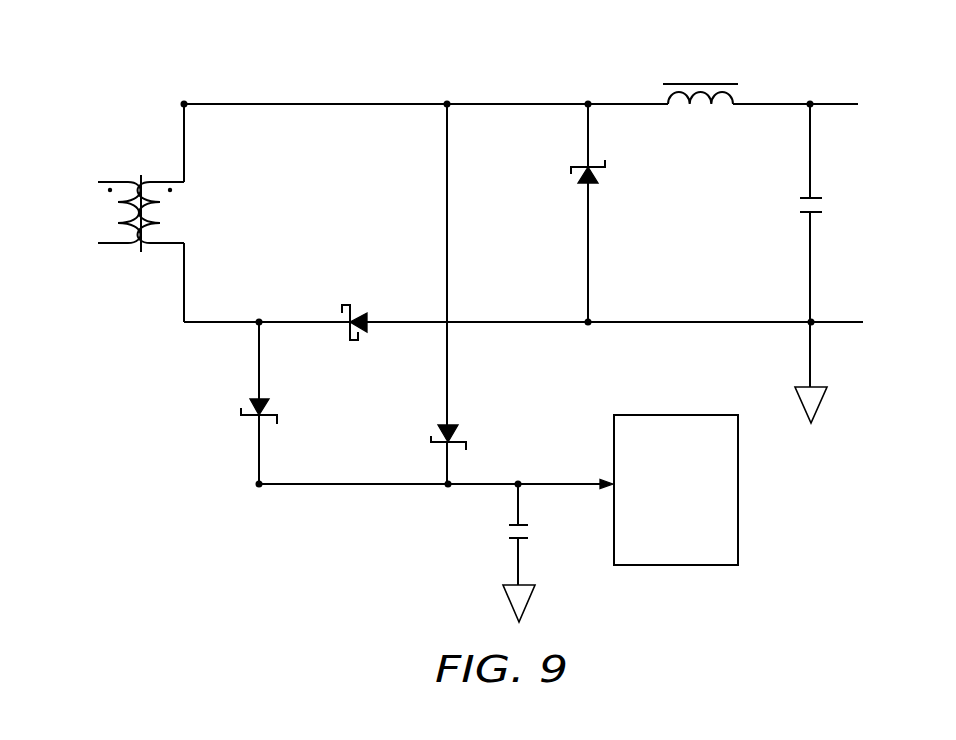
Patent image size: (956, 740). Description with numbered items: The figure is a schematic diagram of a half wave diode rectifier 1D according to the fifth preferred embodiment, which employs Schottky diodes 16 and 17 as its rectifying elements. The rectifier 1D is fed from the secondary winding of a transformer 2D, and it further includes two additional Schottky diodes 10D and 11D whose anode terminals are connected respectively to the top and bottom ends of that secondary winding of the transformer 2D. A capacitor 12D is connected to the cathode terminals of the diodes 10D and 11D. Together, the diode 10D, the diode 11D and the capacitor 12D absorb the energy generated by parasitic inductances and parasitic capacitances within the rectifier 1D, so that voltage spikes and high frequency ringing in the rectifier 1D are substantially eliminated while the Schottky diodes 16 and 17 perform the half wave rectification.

The half wave diode rectifier 1D is at (170, 72).
The transformer 2D is at (80, 229).
The Schottky diode 16 is at (558, 171).
The Schottky diode 17 is at (345, 294).
The Schottky diode 11D is at (267, 393).
The Schottky diode 10D is at (458, 424).
The capacitor 12D is at (498, 540).